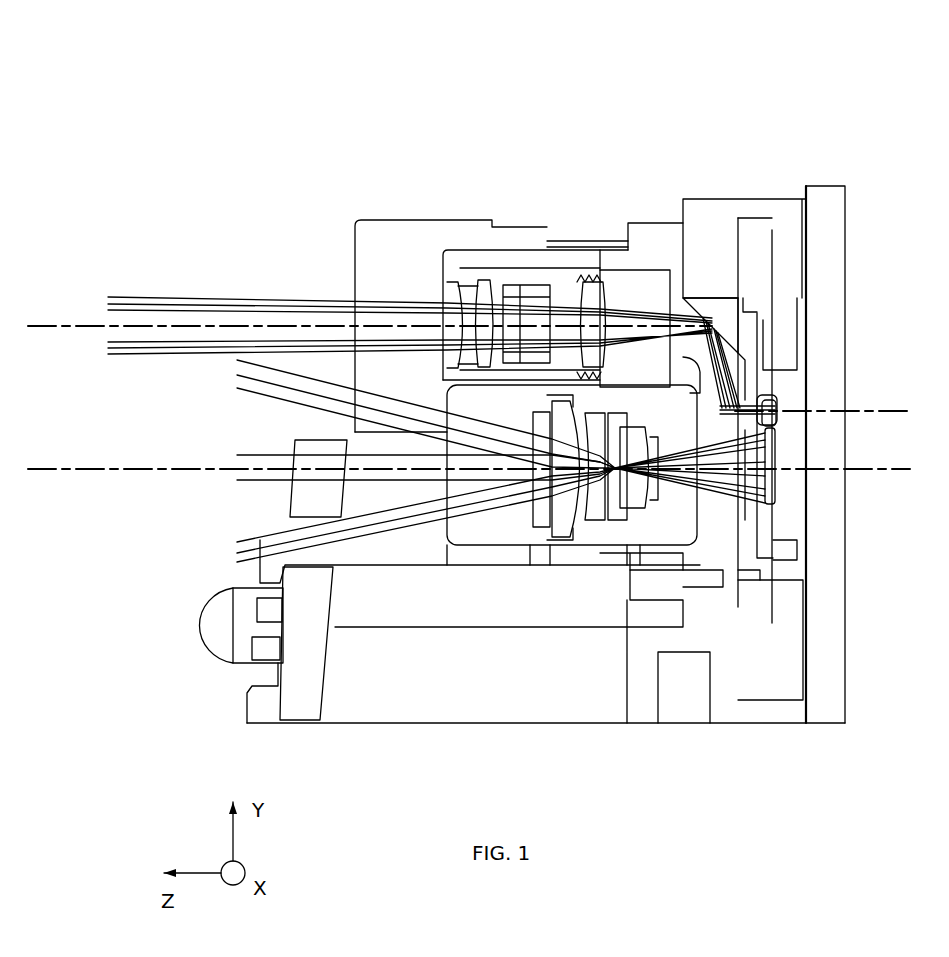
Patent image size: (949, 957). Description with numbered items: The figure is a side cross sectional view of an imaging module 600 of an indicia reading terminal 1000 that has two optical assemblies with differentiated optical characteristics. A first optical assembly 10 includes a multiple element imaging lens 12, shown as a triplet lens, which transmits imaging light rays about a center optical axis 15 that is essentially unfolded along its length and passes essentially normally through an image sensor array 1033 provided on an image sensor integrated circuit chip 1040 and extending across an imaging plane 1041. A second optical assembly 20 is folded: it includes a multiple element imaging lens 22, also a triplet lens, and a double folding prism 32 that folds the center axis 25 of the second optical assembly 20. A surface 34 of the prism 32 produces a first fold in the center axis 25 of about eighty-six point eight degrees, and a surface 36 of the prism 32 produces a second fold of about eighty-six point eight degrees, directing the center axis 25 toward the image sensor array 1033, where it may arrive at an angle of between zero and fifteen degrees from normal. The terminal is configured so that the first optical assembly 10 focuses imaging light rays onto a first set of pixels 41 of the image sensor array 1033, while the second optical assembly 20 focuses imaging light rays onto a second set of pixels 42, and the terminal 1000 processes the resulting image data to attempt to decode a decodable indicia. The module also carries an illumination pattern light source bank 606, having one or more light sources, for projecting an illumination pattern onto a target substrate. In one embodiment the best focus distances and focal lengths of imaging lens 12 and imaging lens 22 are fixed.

The indicia reading terminal 1000 is at (670, 98).
The imaging module 600 is at (717, 197).
The imaging plane 1041 is at (772, 238).
The image sensor array 1033 is at (755, 522).
The image sensor integrated circuit chip 1040 is at (785, 515).
The second optical assembly 20 is at (650, 287).
The multiple element imaging lens 22 is at (563, 287).
The double folding prism 32 is at (698, 302).
The surface of prism 36 is at (700, 390).
The surface of prism 34 is at (740, 343).
The second set of pixels 42 is at (745, 411).
The center axis 25 is at (42, 328).
The center optical axis 15 is at (42, 470).
The first optical assembly 10 is at (648, 530).
The multiple element imaging lens 12 is at (593, 520).
The first set of pixels 41 is at (747, 478).
The illumination pattern light source bank 606 is at (183, 611).